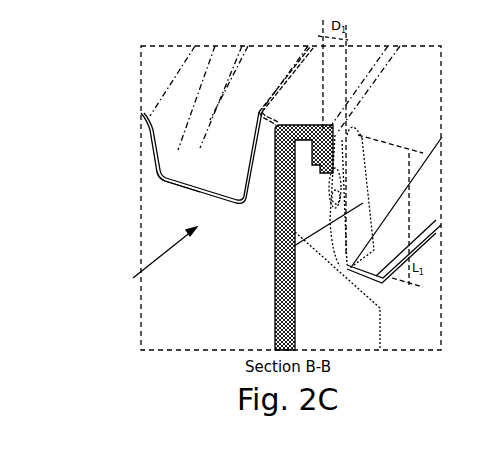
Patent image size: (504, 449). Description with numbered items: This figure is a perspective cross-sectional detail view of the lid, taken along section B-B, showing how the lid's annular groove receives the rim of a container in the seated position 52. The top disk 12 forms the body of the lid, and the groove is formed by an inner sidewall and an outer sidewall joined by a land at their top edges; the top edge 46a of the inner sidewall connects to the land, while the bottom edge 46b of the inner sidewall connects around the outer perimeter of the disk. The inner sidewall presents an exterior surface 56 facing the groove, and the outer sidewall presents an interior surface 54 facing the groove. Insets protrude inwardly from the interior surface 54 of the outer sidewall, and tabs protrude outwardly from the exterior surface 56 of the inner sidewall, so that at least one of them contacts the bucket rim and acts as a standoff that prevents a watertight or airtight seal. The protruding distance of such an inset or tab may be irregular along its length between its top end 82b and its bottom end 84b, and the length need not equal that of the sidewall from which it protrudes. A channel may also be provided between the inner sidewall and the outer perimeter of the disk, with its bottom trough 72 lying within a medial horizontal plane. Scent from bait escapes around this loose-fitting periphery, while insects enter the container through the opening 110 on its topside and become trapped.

The top disk 12 is at (153, 80).
The top edge of inner sidewall 46a is at (262, 108).
The bottom edge of inner sidewall 46b is at (233, 193).
The exterior surface of inner sidewall 56 is at (250, 157).
The bottom trough 72 is at (178, 187).
The opening 110 is at (147, 267).
The interior surface of outer sidewall 54 is at (325, 235).
The seated position 52 is at (446, 44).
The top end 82b is at (333, 130).
The bottom end 84b is at (347, 270).